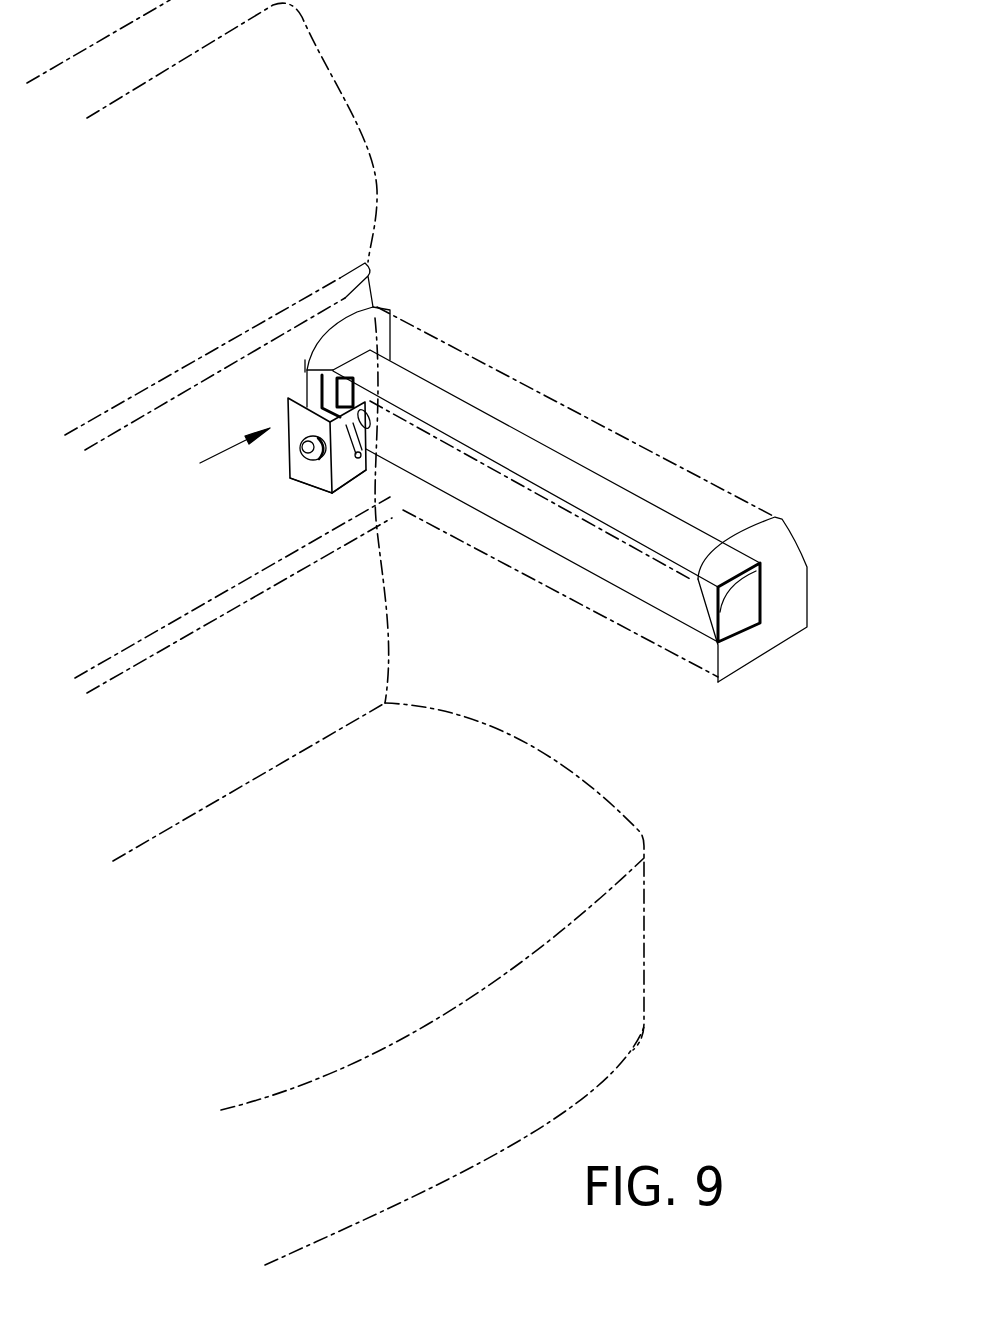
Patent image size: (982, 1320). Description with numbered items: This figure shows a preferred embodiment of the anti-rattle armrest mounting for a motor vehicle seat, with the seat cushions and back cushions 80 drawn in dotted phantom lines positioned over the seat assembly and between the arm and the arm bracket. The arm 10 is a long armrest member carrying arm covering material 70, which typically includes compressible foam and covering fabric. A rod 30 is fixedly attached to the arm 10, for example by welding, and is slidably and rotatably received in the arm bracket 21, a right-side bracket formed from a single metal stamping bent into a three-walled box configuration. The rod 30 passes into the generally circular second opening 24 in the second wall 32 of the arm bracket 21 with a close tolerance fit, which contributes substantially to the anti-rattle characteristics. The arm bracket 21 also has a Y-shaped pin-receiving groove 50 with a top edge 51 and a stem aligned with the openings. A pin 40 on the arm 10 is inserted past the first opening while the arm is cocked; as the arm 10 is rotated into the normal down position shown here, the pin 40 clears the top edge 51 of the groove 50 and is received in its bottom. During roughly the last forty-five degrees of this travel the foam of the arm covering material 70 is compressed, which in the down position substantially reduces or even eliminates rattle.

The arm 10 is at (560, 465).
The arm bracket 21 is at (213, 458).
The second opening 24 is at (293, 482).
The rod 30 is at (292, 405).
The second wall 32 is at (307, 449).
The pin 40 is at (358, 457).
The pin-receiving groove 50 is at (332, 494).
The top edge 51 is at (352, 406).
The arm covering material 70 is at (413, 343).
The seat cushions and back cushions 80 is at (348, 240).